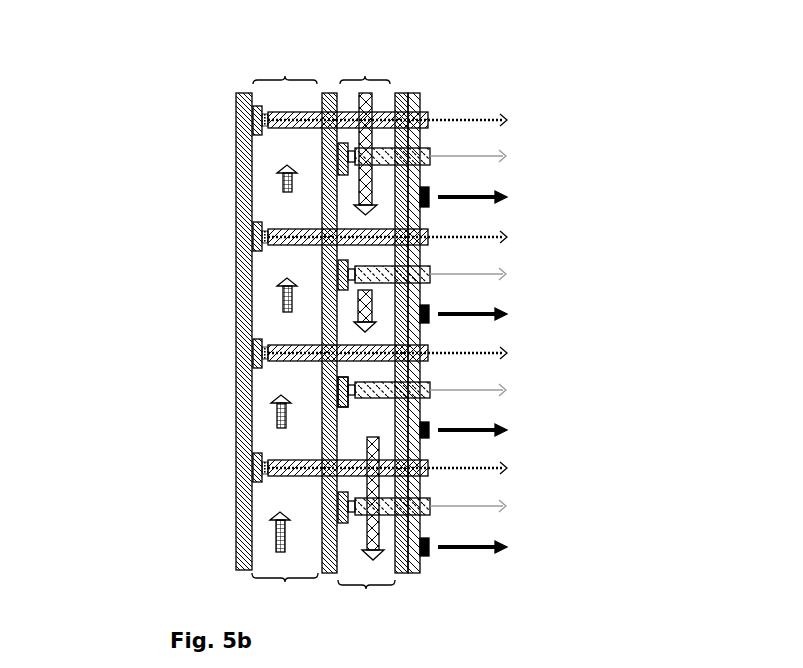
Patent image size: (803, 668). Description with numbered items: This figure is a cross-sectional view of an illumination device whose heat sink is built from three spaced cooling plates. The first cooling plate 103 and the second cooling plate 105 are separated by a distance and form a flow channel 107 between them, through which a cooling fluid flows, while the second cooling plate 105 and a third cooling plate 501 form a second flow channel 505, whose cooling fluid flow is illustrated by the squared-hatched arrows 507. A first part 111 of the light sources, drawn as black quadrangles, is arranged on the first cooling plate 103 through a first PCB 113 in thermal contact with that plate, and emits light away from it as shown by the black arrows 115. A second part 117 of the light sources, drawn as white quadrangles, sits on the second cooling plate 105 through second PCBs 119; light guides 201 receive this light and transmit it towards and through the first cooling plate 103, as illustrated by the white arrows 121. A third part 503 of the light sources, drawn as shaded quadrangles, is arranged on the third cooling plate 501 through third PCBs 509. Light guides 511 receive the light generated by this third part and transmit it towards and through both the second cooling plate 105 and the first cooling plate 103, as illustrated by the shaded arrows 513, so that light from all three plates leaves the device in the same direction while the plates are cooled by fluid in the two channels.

The first cooling plate 103 is at (503, 314).
The second cooling plate 105 is at (330, 92).
The flow channel 107 is at (366, 337).
The first part of the light sources 111 is at (428, 206).
The first PCB 113 is at (413, 211).
The black arrows 115 is at (505, 200).
The second part of the light sources 117 is at (355, 400).
The second PCBs 119 is at (345, 380).
The white arrows 121 is at (506, 394).
The light guides 201 is at (348, 388).
The third cooling plate 501 is at (251, 113).
The third part of the light sources 503 is at (253, 126).
The second flow channel 505 is at (285, 331).
The squared-hatched arrows 507 is at (287, 180).
The third PCBs 509 is at (262, 118).
The light guides 511 is at (428, 110).
The shaded arrows 513 is at (487, 122).